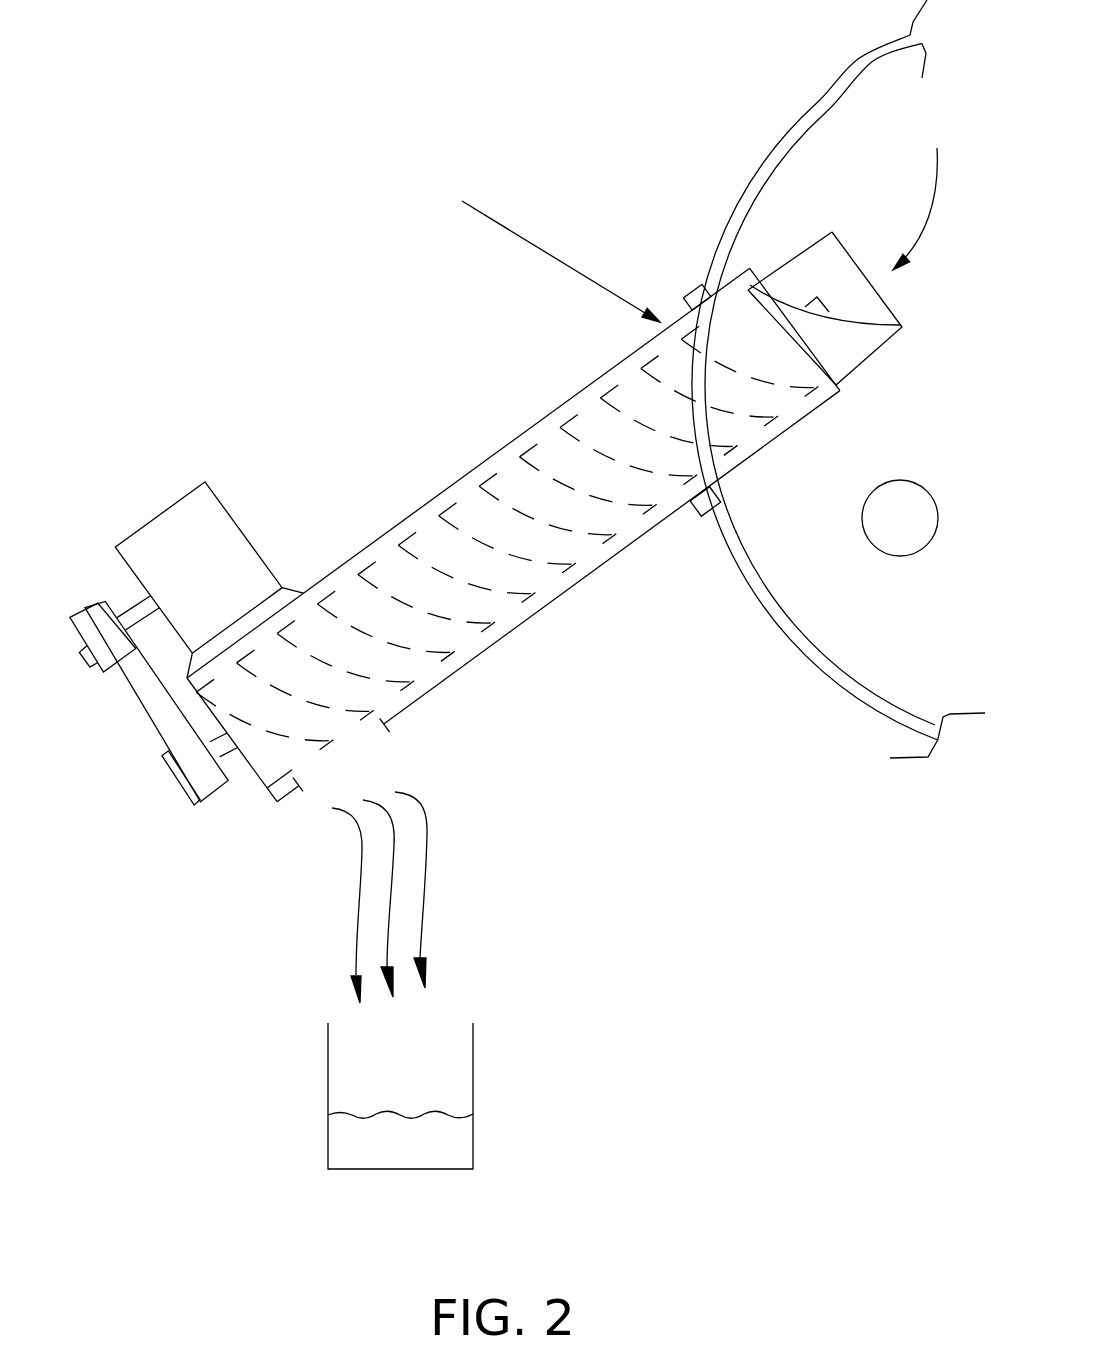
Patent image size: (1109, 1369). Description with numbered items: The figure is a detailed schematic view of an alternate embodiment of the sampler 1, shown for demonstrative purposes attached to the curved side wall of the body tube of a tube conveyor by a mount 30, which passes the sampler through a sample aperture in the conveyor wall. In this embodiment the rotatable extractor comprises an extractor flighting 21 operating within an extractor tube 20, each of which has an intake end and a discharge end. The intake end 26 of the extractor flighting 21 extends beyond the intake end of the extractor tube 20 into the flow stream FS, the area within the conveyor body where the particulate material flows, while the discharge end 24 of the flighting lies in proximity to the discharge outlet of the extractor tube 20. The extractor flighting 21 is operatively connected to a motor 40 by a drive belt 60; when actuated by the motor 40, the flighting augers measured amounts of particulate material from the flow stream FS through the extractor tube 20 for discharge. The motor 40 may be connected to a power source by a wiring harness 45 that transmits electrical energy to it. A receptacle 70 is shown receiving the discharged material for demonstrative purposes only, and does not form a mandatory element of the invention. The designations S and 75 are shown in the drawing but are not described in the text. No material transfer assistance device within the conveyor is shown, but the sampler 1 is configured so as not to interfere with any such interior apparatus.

The sampler 1 is at (486, 526).
The extractor tube 20 is at (872, 306).
The extractor flighting 21 is at (513, 440).
The discharge end 24 is at (318, 798).
The intake end 26 is at (812, 246).
The mount 30 is at (687, 297).
The motor 40 is at (161, 513).
The wiring harness 45 is at (250, 535).
The drive belt 60 is at (142, 712).
The receptacle 70 is at (400, 1170).
The collected sample 75 is at (453, 1152).
The sample material S is at (549, 251).
The flow stream area FS is at (900, 518).